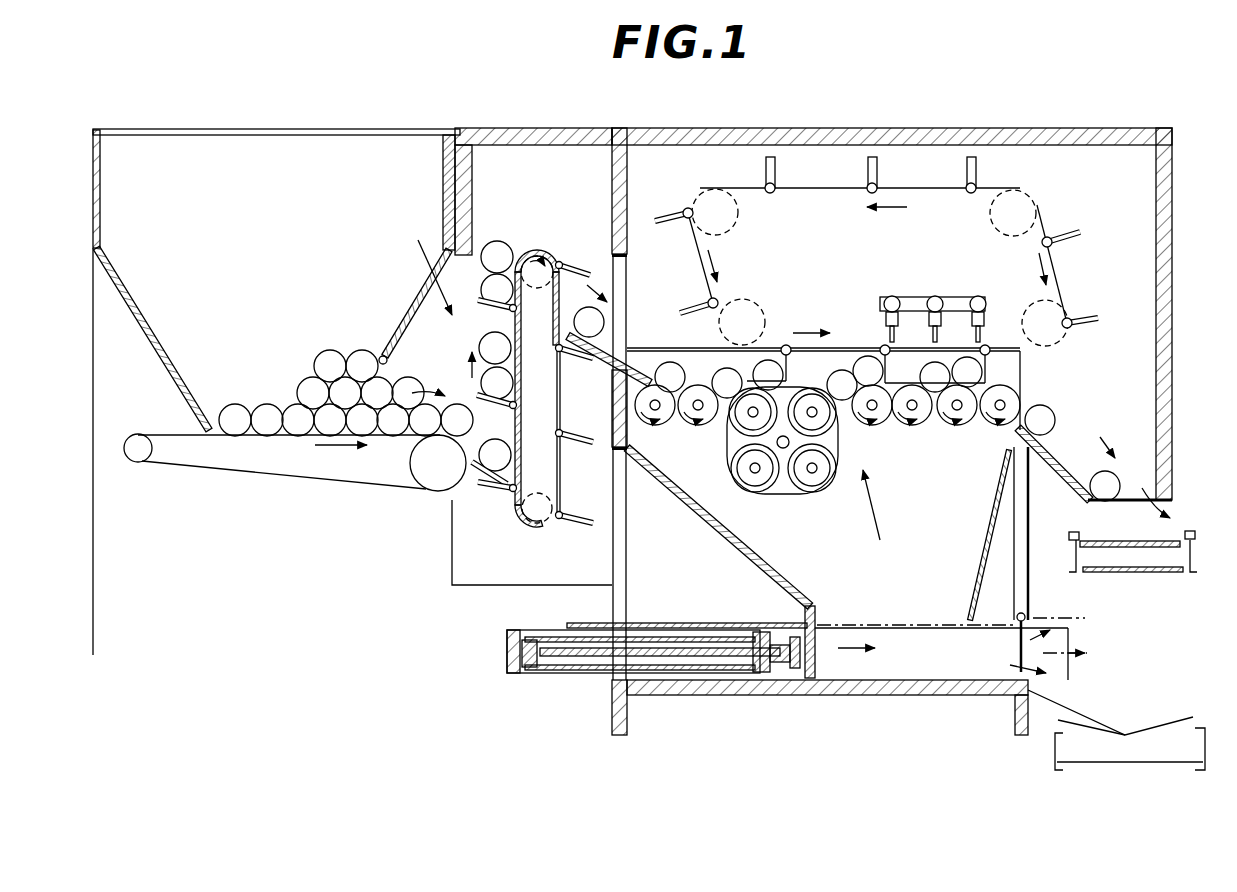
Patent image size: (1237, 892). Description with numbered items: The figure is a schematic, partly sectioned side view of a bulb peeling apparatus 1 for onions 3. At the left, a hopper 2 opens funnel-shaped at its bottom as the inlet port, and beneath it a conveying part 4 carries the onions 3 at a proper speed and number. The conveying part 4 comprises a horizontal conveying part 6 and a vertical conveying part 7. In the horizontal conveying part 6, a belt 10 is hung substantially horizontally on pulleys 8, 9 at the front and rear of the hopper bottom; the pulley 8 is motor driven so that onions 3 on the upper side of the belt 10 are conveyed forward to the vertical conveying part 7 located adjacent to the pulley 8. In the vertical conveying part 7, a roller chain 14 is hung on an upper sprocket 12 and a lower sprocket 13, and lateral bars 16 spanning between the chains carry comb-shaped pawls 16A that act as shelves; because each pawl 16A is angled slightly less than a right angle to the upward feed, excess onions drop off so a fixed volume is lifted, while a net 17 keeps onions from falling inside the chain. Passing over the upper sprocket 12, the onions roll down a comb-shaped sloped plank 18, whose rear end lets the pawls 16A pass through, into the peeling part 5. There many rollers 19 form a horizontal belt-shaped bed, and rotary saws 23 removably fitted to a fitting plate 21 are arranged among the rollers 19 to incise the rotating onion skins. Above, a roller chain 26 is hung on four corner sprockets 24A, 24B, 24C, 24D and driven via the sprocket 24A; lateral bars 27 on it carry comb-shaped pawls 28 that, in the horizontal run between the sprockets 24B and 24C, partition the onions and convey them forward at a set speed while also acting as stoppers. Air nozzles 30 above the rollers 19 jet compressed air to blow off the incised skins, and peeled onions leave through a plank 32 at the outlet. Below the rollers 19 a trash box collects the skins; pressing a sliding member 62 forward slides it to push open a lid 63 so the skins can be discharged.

The can handling apparatus 1 is at (145, 112).
The hopper 2 is at (396, 336).
The onions 3 is at (328, 368).
The conveying part 4 is at (427, 264).
The peeling part 5 is at (880, 523).
The horizontal conveying part 6 is at (302, 482).
The vertical conveying part 7 is at (538, 538).
The pulley 8 is at (425, 472).
The pulley 9 is at (137, 462).
The belt 10 is at (228, 470).
The upper sprocket 12 is at (535, 250).
The lower sprocket 13 is at (520, 527).
The roller chain 14 is at (505, 325).
The bars 16 is at (557, 260).
The comb-shaped pawls 16A is at (573, 263).
The net 17 is at (500, 488).
The sloped plank 18 is at (615, 350).
The rollers 19 is at (655, 428).
The fitting plate 21 is at (750, 540).
The rotary saws 23 is at (824, 492).
The sprocket 24A is at (687, 193).
The sprocket 24B is at (760, 308).
The sprocket 24C is at (1053, 302).
The sprocket 24D is at (1030, 197).
The roller chain 26 is at (1053, 263).
The lateral bars 27 is at (772, 190).
The comb-shaped pawls 28 is at (771, 188).
The air nozzles 30 is at (972, 330).
The plank 32 is at (1057, 462).
The sliding member 62 is at (562, 674).
The lid 63 is at (1048, 632).